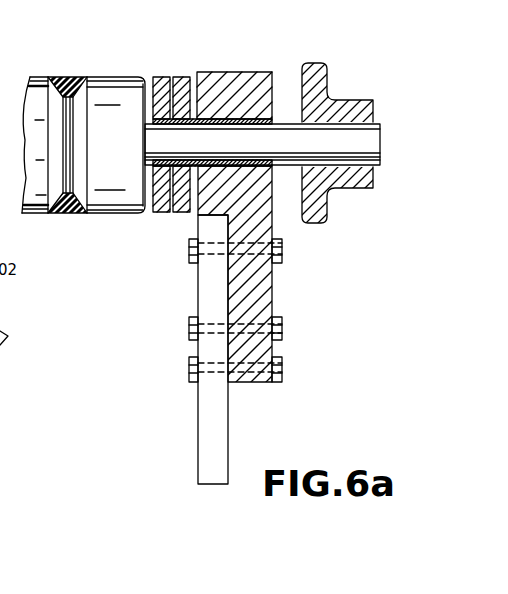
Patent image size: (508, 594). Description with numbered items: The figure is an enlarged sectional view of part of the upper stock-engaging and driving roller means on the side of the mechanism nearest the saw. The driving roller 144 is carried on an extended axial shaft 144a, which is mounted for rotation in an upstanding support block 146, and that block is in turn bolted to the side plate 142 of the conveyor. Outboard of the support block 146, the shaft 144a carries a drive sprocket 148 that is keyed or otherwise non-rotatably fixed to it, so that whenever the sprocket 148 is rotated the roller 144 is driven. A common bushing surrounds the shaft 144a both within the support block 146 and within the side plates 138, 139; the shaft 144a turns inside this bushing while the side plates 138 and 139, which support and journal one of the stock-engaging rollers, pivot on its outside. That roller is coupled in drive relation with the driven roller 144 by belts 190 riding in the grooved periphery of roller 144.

The side plate 138 is at (163, 77).
The side plate 139 is at (178, 73).
The side plate of conveyor 142 is at (208, 285).
The driving roller 144 is at (128, 139).
The roller shaft 144a is at (368, 130).
The upstanding support block 146 is at (255, 72).
The drive sprocket 148 is at (327, 75).
The belt 190 is at (72, 78).